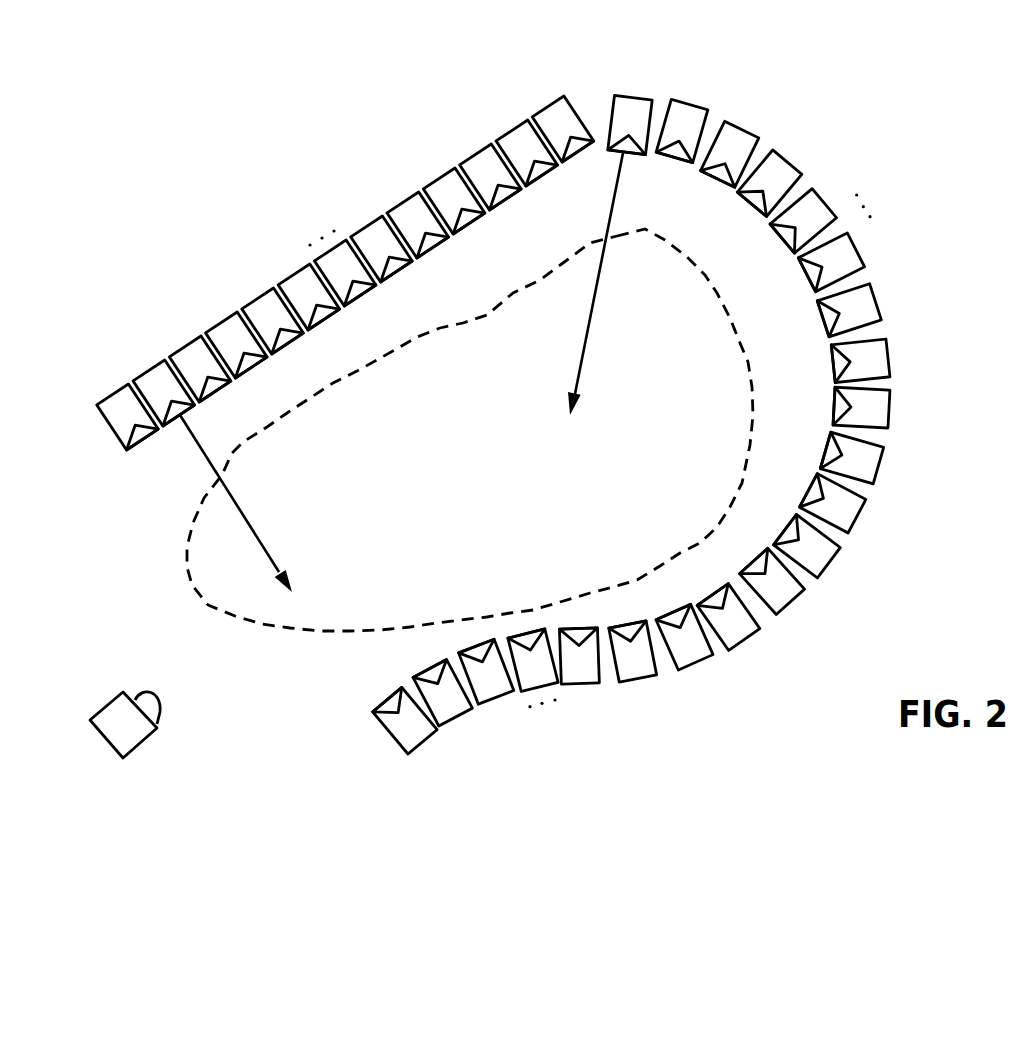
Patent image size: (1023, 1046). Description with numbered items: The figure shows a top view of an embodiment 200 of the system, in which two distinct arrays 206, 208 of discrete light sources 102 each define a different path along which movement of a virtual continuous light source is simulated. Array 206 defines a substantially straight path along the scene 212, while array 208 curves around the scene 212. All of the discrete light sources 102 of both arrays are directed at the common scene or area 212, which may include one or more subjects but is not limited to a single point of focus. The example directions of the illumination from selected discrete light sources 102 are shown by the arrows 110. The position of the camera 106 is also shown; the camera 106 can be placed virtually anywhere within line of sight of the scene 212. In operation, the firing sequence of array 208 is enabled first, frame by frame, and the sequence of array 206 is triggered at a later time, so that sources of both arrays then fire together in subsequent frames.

The embodiment of the system 200 is at (900, 96).
The array 206 is at (251, 268).
The array 208 is at (683, 420).
The scene 212 is at (510, 290).
The arrows 110 is at (595, 325).
The discrete light sources 102 is at (888, 469).
The camera 106 is at (125, 688).